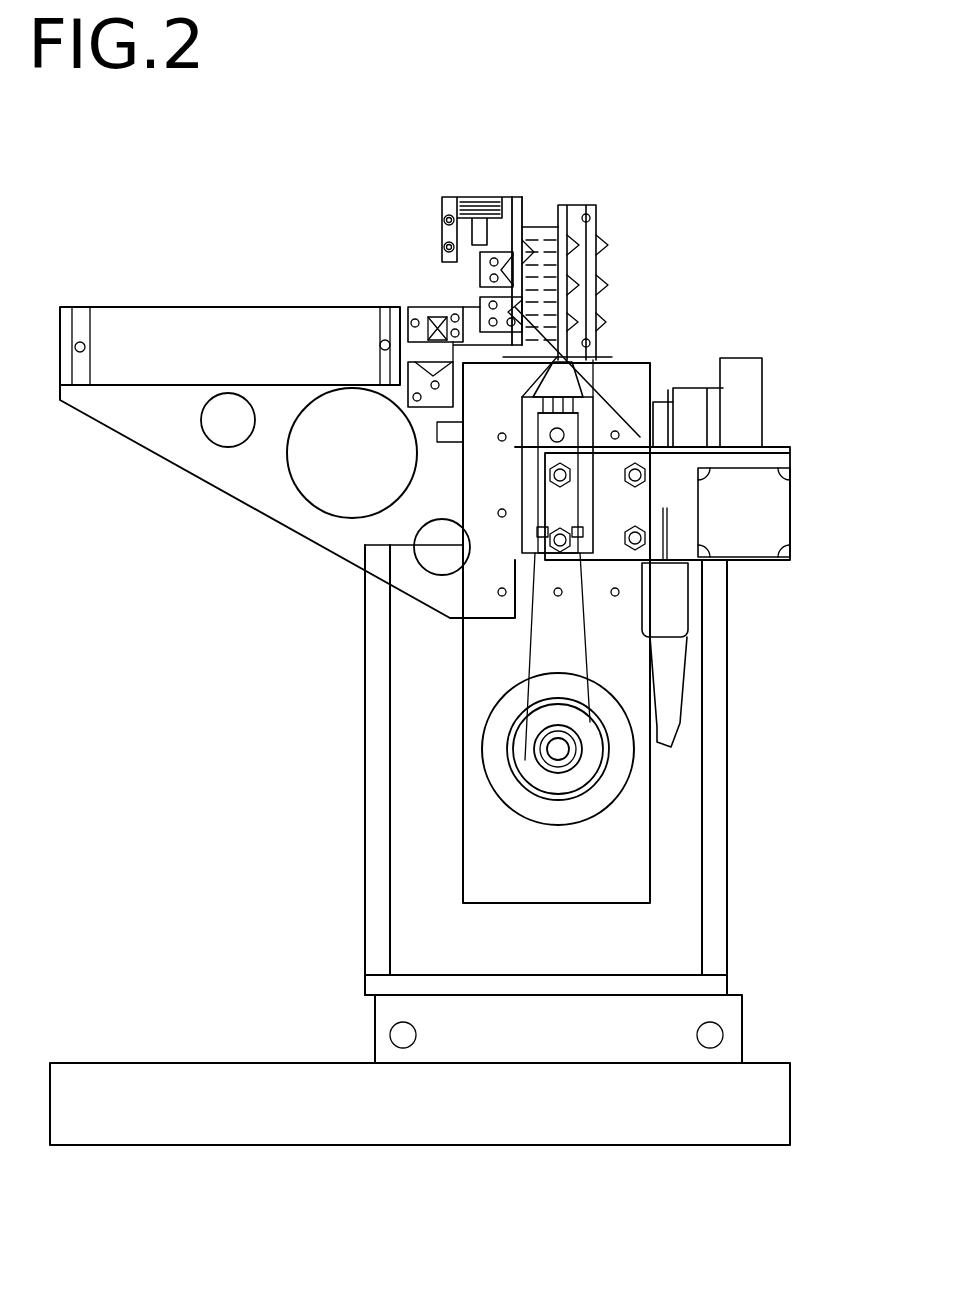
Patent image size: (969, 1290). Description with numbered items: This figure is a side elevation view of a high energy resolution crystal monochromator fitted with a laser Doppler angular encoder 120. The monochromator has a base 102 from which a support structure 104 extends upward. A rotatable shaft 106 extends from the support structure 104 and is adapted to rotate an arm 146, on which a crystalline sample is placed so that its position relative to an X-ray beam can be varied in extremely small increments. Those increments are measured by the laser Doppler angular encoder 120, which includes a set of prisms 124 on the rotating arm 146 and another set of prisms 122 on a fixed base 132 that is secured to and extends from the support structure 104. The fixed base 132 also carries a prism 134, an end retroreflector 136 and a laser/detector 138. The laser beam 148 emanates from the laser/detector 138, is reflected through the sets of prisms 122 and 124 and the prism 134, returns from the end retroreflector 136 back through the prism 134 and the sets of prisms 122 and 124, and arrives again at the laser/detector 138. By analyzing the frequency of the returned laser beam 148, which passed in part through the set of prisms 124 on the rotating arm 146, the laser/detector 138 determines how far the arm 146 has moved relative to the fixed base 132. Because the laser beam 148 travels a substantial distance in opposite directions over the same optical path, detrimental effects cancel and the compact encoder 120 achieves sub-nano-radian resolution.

The base 102 is at (742, 1046).
The support structure 104 is at (652, 887).
The rotatable shaft 106 is at (550, 755).
The laser Doppler angular encoder 120 is at (610, 198).
The set of prisms 122 is at (515, 197).
The set of prisms 124 is at (605, 258).
The fixed base 132 is at (258, 477).
The prism 134 is at (437, 327).
The end retroreflector 136 is at (430, 360).
The laser/detector 138 is at (183, 307).
The arm 146 is at (578, 645).
The laser beam 148 is at (540, 227).